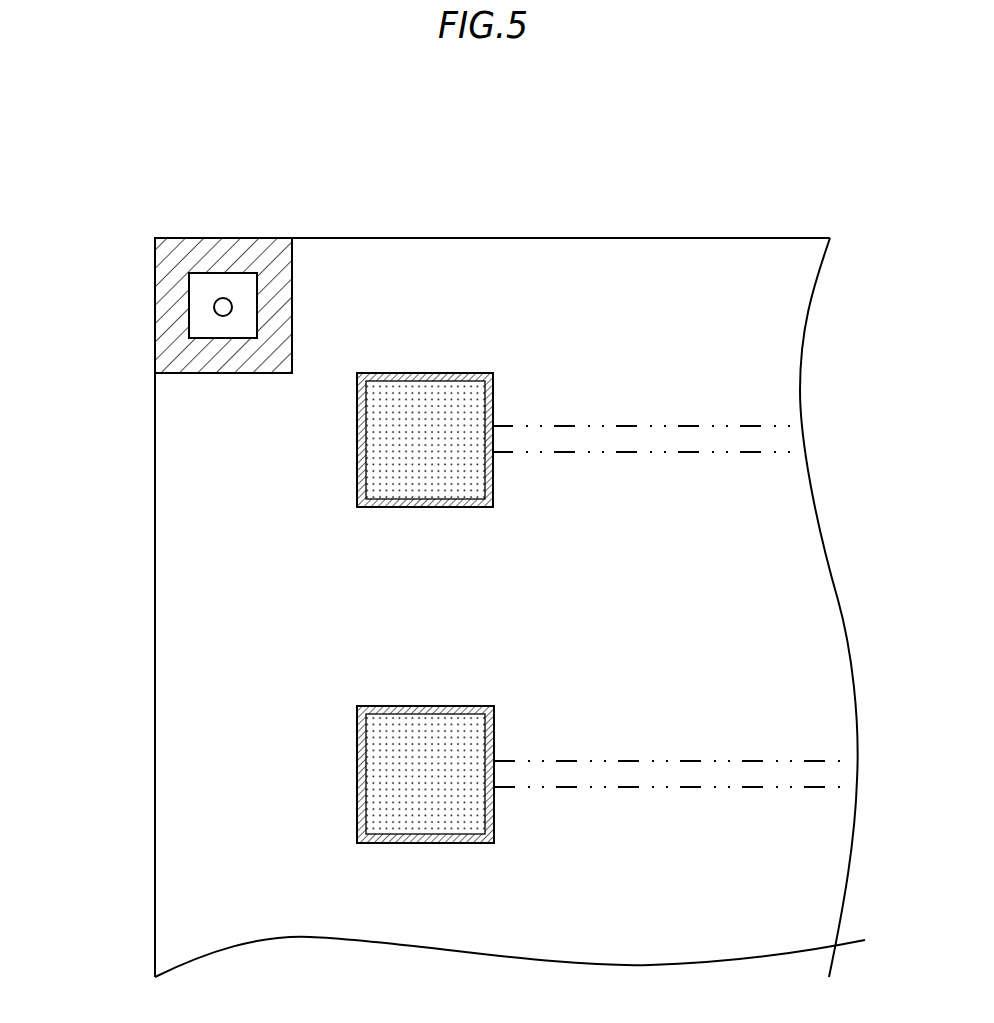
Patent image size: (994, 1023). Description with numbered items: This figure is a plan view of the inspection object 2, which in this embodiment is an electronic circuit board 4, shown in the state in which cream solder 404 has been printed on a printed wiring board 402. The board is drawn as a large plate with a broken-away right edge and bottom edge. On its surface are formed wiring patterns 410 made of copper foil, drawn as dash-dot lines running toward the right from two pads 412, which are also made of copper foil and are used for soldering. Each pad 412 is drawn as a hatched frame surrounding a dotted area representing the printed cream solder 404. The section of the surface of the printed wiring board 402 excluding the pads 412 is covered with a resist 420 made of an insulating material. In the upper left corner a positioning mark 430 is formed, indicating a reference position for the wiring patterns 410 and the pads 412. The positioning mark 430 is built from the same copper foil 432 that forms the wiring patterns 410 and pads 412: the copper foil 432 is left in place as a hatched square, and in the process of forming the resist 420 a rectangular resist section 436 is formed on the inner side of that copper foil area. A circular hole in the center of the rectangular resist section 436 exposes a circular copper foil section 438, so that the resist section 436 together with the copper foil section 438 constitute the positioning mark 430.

The inspection object 2 is at (536, 530).
The electronic circuit board 4 is at (536, 530).
The printed wiring board 402 is at (582, 238).
The cream solder 404 is at (440, 387).
The wiring patterns 410 is at (692, 425).
The pads 412 is at (478, 372).
The resist 420 is at (536, 565).
The positioning mark 430 is at (200, 249).
The copper foil 432 is at (172, 280).
The rectangular resist section 436 is at (246, 282).
The circular copper foil section 438 is at (218, 320).